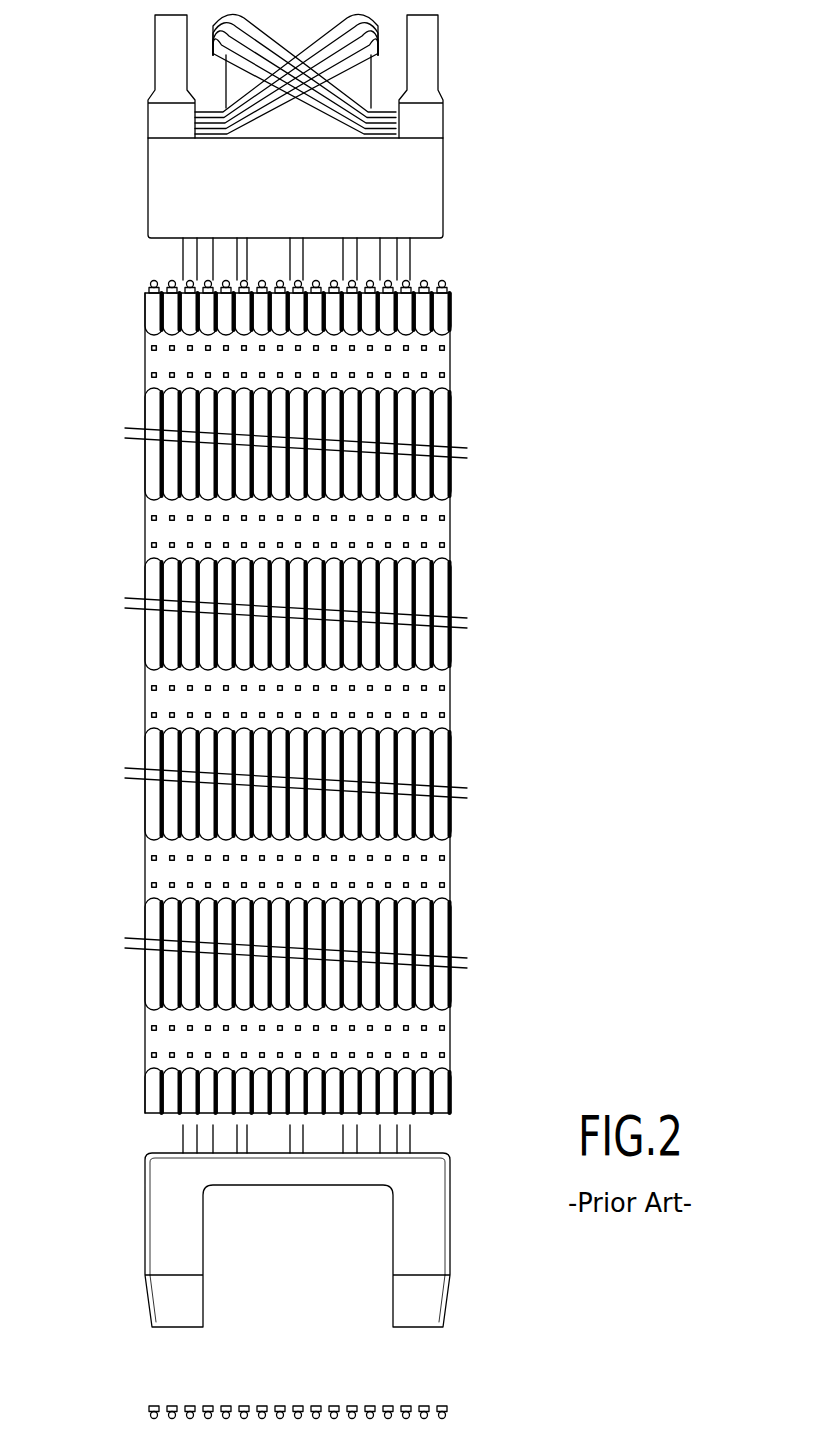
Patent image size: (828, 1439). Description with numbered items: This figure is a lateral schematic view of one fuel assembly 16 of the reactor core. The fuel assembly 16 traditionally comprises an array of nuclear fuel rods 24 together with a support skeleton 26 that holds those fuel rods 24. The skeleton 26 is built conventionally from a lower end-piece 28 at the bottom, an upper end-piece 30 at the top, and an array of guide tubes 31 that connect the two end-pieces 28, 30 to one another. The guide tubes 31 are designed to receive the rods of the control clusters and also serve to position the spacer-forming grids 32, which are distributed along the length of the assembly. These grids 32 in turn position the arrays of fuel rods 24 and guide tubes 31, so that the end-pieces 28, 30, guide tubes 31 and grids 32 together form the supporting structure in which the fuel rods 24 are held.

The support skeleton 26 is at (470, 191).
The upper end-piece 30 is at (163, 190).
The guide tubes 31 is at (407, 265).
The fuel assembly 16 is at (470, 597).
The spacer-forming grids 32 is at (148, 712).
The nuclear fuel rods 24 is at (435, 955).
The lower end-piece 28 is at (427, 1298).